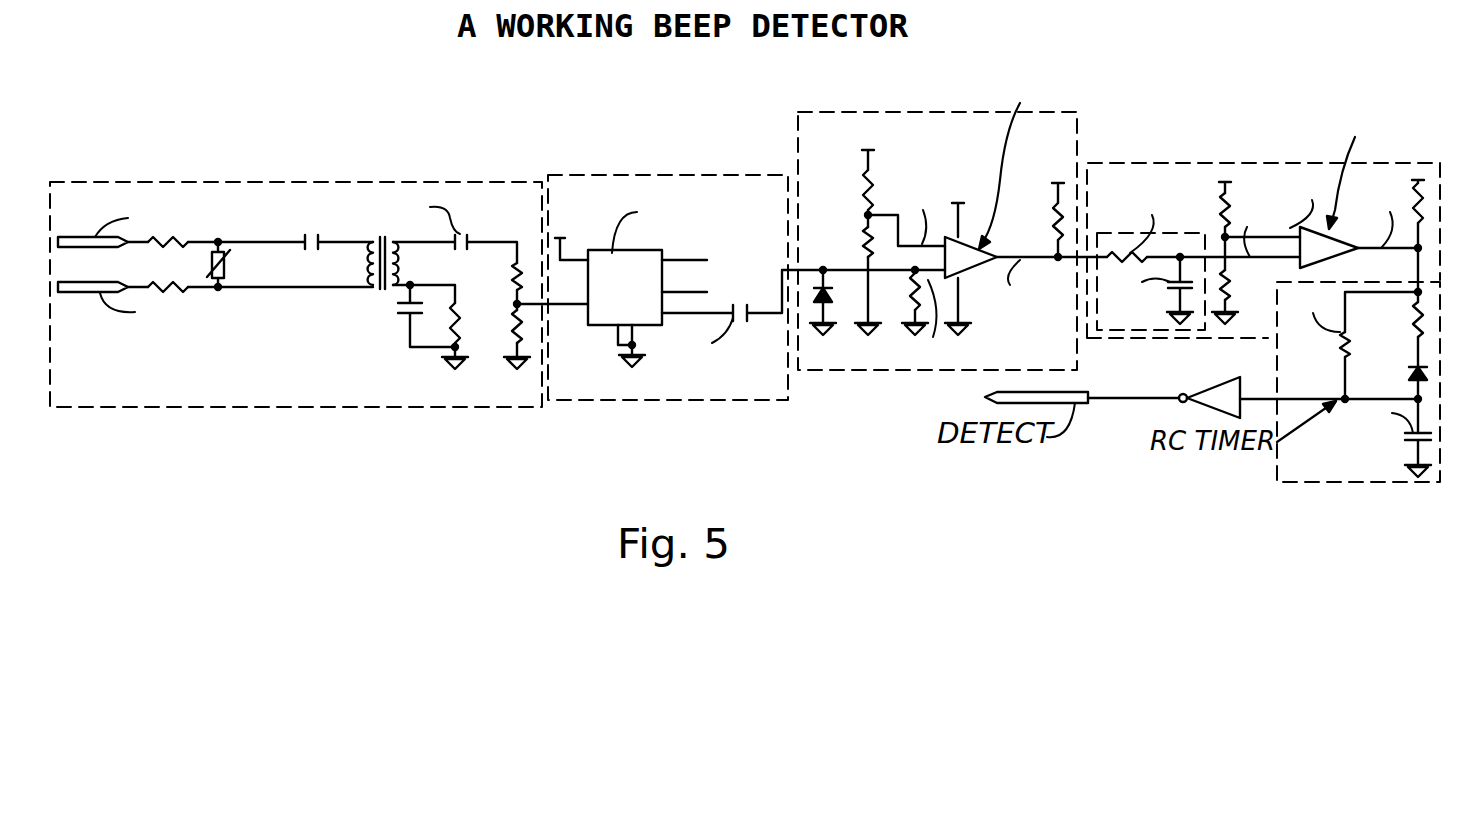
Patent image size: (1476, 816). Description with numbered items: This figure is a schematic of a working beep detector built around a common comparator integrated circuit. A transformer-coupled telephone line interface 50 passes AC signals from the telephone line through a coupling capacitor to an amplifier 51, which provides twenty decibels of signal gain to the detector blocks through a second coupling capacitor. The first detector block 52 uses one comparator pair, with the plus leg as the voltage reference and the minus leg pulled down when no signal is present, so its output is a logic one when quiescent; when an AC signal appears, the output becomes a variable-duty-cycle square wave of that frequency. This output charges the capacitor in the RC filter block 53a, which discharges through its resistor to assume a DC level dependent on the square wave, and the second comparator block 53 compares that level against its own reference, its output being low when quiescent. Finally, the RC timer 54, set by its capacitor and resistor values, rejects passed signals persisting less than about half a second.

The transformer-coupled telephone line interface 50 is at (319, 294).
The amplifier 51 is at (685, 287).
The first comparator block 52 is at (974, 223).
The second comparator block 53 is at (1263, 222).
The RC filter block 53a is at (1151, 285).
The RC timer 54 is at (1340, 365).